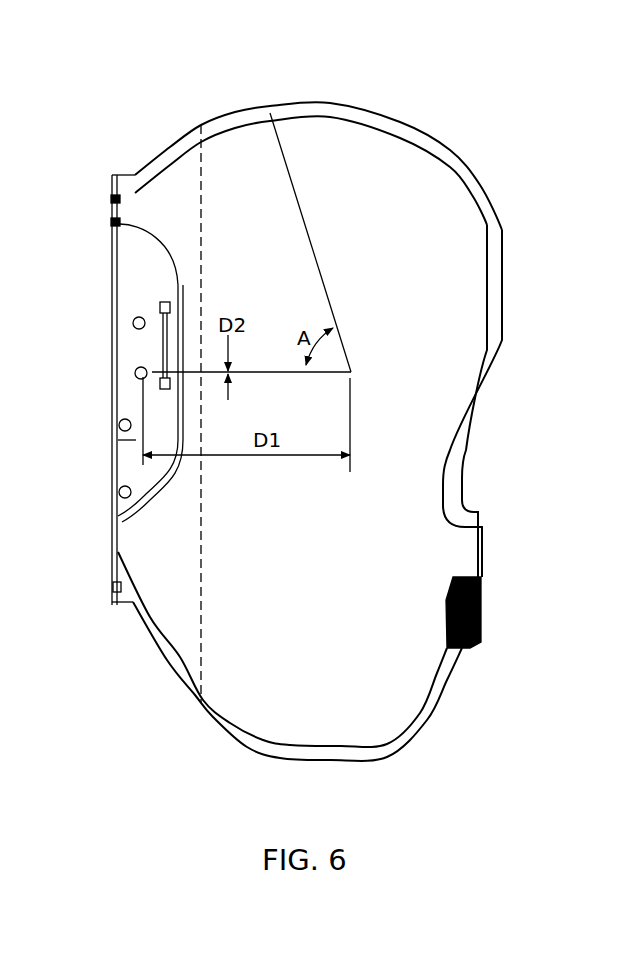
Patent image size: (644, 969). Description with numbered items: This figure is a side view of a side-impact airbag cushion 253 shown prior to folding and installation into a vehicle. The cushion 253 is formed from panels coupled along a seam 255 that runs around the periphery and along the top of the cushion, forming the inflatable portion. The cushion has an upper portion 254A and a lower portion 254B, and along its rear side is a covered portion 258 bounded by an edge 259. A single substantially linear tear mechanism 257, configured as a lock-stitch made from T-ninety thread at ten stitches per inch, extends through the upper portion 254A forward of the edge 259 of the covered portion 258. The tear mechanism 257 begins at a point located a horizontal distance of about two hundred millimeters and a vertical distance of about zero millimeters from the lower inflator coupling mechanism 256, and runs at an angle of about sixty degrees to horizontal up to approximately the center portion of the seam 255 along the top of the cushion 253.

The side-impact airbag cushion 253 is at (520, 448).
The upper portion 254A is at (379, 248).
The lower portion 254B is at (373, 671).
The seam 255 is at (362, 128).
The lower inflator coupling mechanism 256 is at (133, 325).
The tear mechanism 257 is at (342, 341).
The covered portion 258 is at (166, 537).
The edge 259 is at (203, 560).